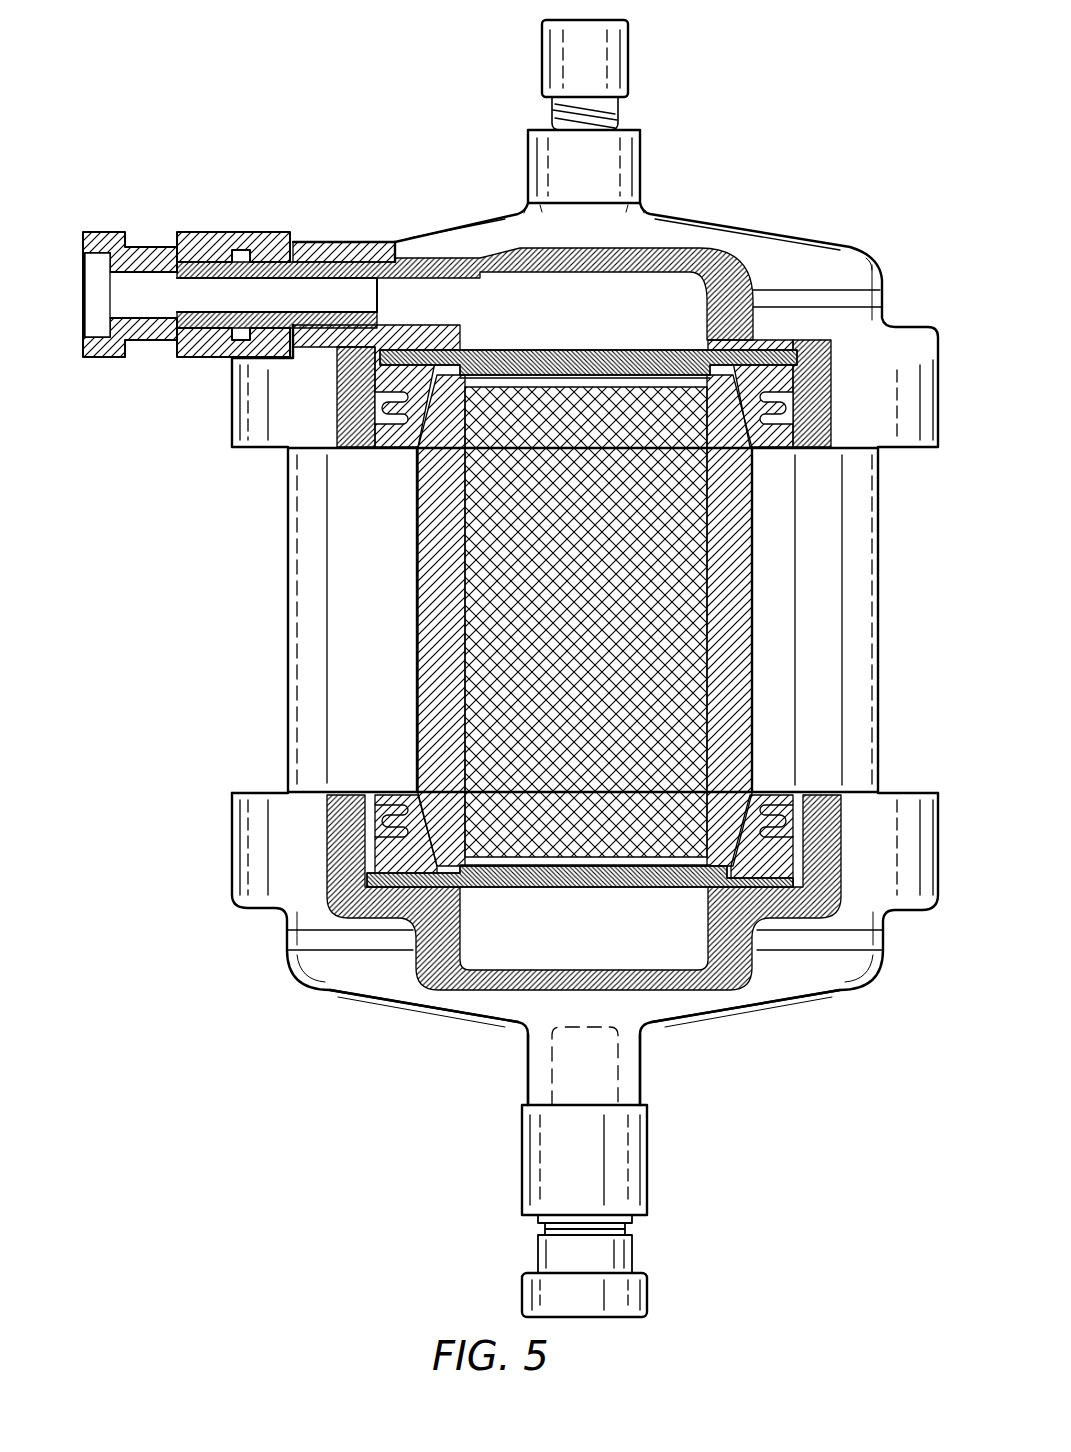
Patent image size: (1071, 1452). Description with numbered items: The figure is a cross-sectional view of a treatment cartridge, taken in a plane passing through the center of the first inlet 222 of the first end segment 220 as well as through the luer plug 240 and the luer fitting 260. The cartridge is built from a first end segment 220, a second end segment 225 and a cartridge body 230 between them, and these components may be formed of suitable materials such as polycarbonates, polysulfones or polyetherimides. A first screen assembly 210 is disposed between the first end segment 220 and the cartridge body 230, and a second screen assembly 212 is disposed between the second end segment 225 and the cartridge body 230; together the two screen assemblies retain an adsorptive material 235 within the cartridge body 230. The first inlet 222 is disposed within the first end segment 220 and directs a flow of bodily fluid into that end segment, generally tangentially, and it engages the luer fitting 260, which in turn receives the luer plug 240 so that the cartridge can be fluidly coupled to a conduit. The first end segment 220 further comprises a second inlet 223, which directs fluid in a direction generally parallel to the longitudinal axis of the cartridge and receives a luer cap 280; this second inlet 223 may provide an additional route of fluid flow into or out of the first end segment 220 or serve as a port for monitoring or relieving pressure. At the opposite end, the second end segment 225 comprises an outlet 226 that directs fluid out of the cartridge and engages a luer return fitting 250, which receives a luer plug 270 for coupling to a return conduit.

The first screen assembly 210 is at (640, 350).
The second screen assembly 212 is at (641, 888).
The first end segment 220 is at (455, 241).
The first inlet 222 is at (315, 243).
The second inlet 223 is at (641, 168).
The second end segment 225 is at (783, 1000).
The outlet 226 is at (640, 1064).
The cartridge body 230 is at (286, 597).
The adsorptive material 235 is at (490, 590).
The luer plug 240 is at (98, 360).
The luer return fitting 250 is at (648, 1159).
The luer fitting 260 is at (236, 232).
The luer plug 270 is at (648, 1282).
The luer cap 280 is at (630, 52).